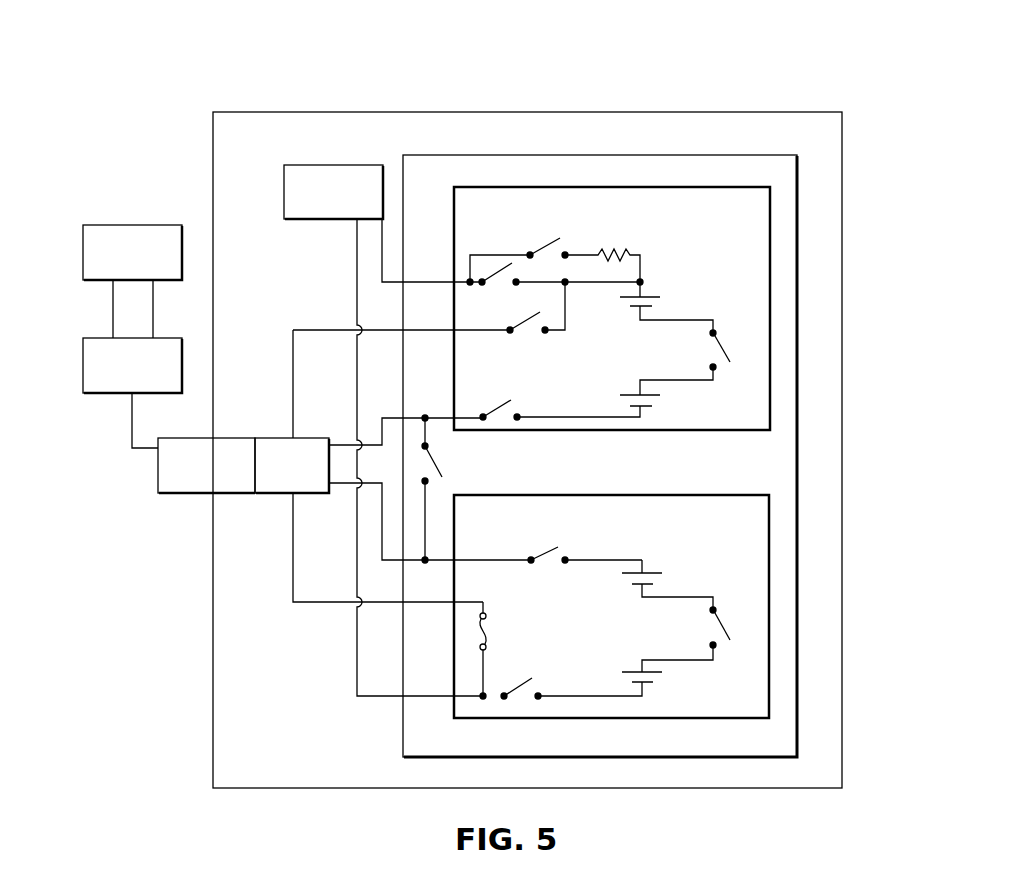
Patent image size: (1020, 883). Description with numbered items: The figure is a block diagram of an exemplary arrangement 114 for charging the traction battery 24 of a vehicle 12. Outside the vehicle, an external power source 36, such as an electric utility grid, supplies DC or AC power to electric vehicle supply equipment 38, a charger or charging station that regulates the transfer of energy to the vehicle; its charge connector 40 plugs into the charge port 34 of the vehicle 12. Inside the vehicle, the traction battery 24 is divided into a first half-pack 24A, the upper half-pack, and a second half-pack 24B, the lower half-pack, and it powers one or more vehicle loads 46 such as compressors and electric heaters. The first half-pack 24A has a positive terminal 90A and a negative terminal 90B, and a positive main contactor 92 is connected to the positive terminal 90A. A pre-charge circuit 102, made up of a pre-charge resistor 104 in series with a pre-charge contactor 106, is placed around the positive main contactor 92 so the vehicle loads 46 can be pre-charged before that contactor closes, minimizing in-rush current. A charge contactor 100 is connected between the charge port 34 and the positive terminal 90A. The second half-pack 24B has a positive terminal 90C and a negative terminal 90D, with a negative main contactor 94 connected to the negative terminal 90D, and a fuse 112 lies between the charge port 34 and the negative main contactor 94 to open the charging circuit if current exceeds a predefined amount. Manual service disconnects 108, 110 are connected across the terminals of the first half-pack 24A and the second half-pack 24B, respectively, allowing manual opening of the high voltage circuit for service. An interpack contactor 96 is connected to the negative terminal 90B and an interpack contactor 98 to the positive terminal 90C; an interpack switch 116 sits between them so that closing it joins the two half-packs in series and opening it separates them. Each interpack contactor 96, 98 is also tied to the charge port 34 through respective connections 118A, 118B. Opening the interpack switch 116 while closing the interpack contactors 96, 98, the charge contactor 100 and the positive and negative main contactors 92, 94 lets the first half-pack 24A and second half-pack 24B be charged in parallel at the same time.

The arrangement 114 is at (181, 80).
The vehicle 12 is at (620, 112).
The traction battery 24 is at (612, 155).
The first half-pack 24A is at (770, 313).
The second half-pack 24B is at (770, 605).
The external power source 36 is at (110, 225).
The electric vehicle supply equipment 38 is at (110, 338).
The charge connector 40 is at (180, 495).
The charge port 34 is at (278, 495).
The vehicle loads 46 is at (337, 165).
The pre-charge circuit 102 is at (663, 225).
The pre-charge contactor 106 is at (545, 246).
The pre-charge resistor 104 is at (620, 250).
The positive main contactor 92 is at (495, 274).
The charge contactor 100 is at (527, 322).
The interpack contactor 96 is at (503, 408).
The positive terminal 90A is at (650, 297).
The negative terminal 90B is at (635, 395).
The positive terminal 90C is at (652, 573).
The negative terminal 90D is at (635, 672).
The manual service disconnect 108 is at (722, 350).
The manual service disconnect 110 is at (722, 628).
The interpack switch 116 is at (437, 465).
The fuse 112 is at (490, 628).
The interpack contactor 98 is at (548, 550).
The negative main contactor 94 is at (532, 680).
The connection 118A is at (374, 428).
The connection 118B is at (382, 527).